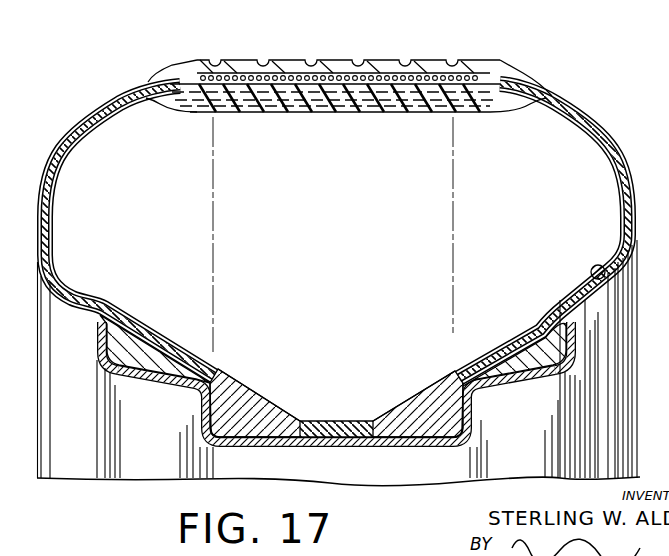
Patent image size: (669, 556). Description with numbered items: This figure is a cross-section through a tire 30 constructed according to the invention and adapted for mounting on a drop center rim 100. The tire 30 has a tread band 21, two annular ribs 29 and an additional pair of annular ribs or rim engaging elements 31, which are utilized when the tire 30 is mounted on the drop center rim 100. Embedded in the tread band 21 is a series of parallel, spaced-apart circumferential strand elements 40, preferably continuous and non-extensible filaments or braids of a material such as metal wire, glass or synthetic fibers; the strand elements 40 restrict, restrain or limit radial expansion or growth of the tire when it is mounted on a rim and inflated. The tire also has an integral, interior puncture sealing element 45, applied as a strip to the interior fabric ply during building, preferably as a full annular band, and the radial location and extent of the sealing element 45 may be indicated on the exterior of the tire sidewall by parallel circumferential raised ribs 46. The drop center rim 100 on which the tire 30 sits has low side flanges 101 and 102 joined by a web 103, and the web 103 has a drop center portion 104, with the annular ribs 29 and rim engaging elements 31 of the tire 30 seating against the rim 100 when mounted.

The tread band 21 is at (402, 57).
The annular ribs 29 is at (157, 343).
The tire 30 is at (52, 137).
The additional annular ribs or rim engaging elements 31 is at (247, 398).
The strand elements 40 is at (290, 76).
The puncture sealing element 45 is at (590, 272).
The raised ribs 46 is at (597, 417).
The drop center rim 100 is at (353, 375).
The low side flange 101 is at (117, 321).
The low side flange 102 is at (537, 316).
The web 103 is at (203, 366).
The drop center portion 104 is at (345, 458).